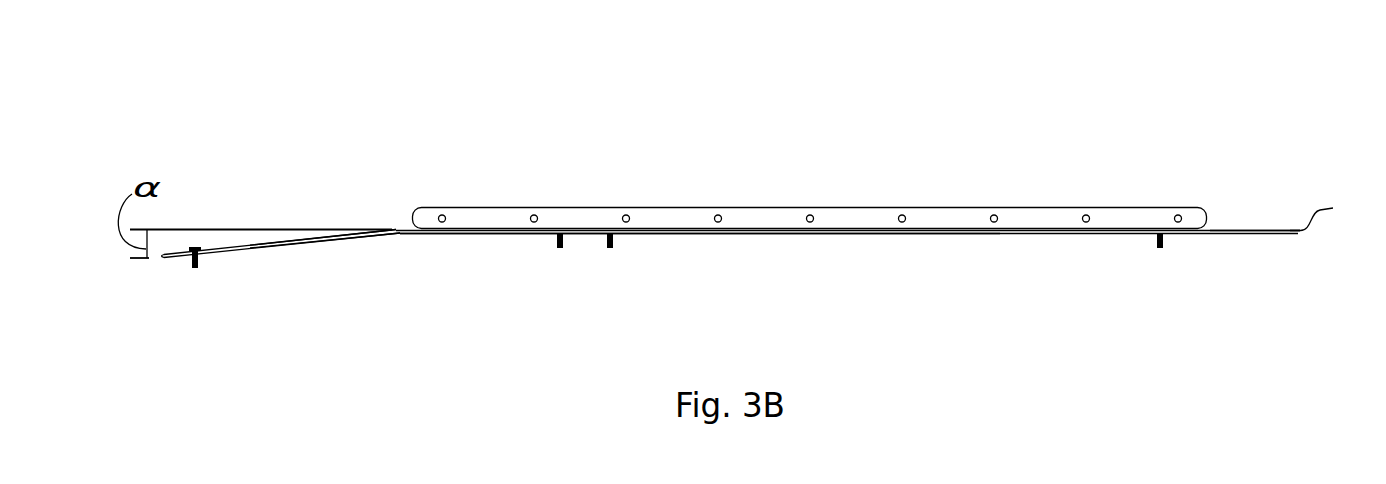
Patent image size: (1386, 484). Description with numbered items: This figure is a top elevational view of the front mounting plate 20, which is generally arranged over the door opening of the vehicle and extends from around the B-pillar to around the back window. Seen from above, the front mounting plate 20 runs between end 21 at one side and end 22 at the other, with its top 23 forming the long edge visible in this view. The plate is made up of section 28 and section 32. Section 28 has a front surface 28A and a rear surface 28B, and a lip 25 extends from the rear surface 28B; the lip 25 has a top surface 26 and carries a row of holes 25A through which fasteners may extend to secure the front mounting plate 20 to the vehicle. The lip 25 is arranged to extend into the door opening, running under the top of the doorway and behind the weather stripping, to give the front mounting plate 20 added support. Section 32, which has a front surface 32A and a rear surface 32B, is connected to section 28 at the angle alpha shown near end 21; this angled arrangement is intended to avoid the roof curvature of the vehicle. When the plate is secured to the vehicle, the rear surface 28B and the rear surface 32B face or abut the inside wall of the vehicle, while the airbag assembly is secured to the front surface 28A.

The front mounting plate 20 is at (761, 143).
The end 21 is at (168, 257).
The end 22 is at (1326, 213).
The top 23 is at (935, 234).
The lip 25 is at (569, 207).
The holes 25A is at (442, 214).
The top surface 26 is at (850, 218).
The section 28 is at (1030, 234).
The front surface 28A is at (687, 235).
The rear surface 28B is at (1245, 230).
The section 32 is at (257, 243).
The front surface 32A is at (323, 247).
The rear surface 32B is at (345, 235).